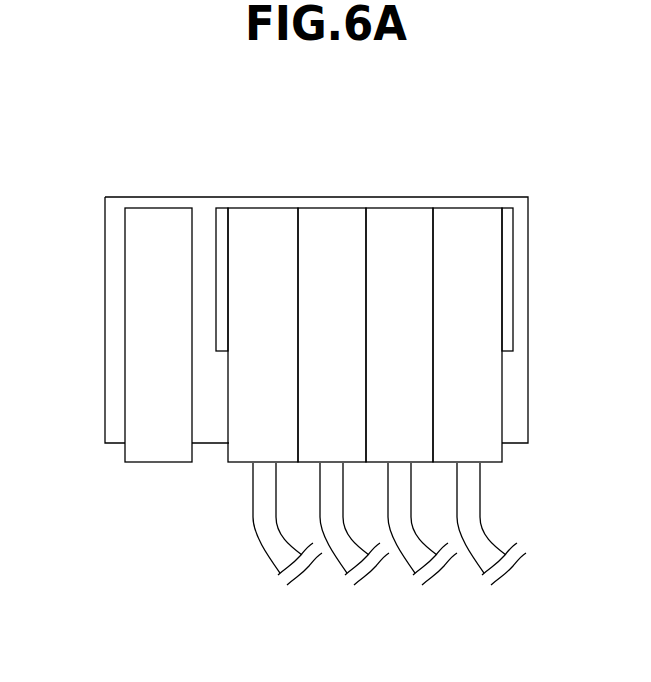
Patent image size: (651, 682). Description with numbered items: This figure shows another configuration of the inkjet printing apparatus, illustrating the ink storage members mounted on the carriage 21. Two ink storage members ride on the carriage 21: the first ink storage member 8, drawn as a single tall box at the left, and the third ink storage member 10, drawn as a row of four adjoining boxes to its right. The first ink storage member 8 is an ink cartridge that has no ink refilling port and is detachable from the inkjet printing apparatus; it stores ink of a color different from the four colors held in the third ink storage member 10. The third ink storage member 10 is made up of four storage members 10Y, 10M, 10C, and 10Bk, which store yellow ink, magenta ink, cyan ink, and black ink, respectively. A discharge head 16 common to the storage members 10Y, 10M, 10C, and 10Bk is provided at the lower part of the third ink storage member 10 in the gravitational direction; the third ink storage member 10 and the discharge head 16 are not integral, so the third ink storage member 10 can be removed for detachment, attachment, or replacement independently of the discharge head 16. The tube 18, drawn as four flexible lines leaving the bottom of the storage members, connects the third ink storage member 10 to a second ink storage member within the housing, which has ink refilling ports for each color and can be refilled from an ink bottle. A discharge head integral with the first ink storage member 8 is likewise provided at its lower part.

The carriage 21 is at (103, 343).
The first ink storage member 8 is at (162, 208).
The discharge head 16 is at (513, 278).
The third ink storage member 10 is at (375, 268).
The storage member 10Y is at (246, 208).
The storage member 10M is at (330, 208).
The storage member 10C is at (407, 208).
The storage member 10Bk is at (476, 298).
The tube 18 is at (545, 597).